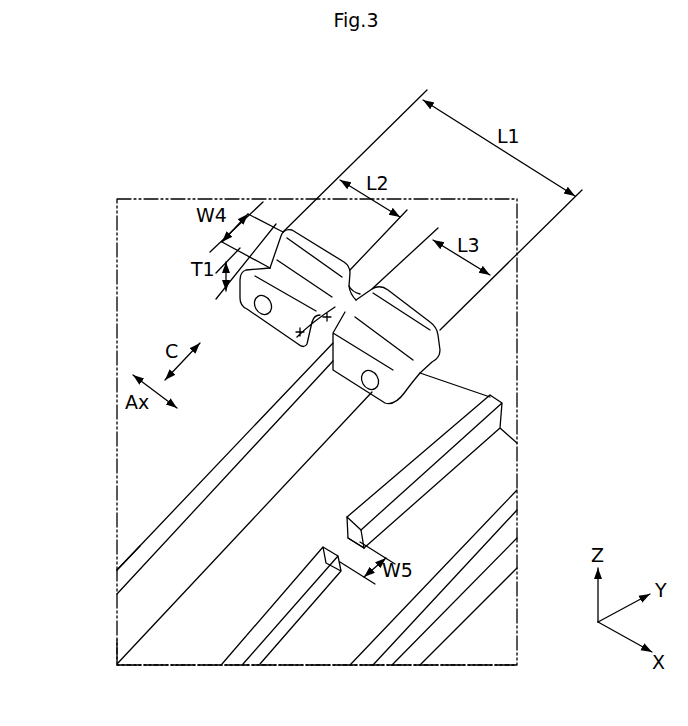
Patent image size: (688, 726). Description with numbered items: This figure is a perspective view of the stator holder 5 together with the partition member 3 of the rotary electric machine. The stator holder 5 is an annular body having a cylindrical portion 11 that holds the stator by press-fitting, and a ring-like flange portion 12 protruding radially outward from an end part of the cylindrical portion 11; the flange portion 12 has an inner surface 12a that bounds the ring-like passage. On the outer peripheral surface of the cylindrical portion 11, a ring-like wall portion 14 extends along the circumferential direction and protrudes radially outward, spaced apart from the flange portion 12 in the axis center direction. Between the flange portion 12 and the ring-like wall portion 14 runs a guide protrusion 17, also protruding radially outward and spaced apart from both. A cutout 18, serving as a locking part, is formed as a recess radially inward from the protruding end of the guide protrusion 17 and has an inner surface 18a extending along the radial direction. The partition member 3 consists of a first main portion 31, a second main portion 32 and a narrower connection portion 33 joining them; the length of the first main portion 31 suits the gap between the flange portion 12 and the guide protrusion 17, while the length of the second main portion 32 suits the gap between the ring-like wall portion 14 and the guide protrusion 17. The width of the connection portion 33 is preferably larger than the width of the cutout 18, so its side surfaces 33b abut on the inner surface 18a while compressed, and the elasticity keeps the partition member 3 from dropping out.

The partition member 3 is at (355, 305).
The first main portion 31 is at (318, 237).
The second main portion 32 is at (415, 302).
The connection portion 33 is at (355, 289).
The side surface 33b is at (326, 317).
The stator holder 5 is at (168, 518).
The cylindrical portion 11 is at (187, 645).
The flange portion 12 is at (253, 427).
The inner surface 12a is at (128, 627).
The ring-like wall portion 14 is at (519, 493).
The guide protrusion 17 is at (500, 393).
The cutout 18 is at (347, 533).
The inner surface 18a is at (356, 543).